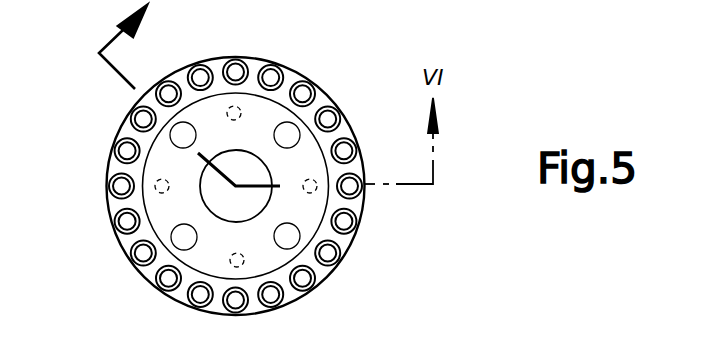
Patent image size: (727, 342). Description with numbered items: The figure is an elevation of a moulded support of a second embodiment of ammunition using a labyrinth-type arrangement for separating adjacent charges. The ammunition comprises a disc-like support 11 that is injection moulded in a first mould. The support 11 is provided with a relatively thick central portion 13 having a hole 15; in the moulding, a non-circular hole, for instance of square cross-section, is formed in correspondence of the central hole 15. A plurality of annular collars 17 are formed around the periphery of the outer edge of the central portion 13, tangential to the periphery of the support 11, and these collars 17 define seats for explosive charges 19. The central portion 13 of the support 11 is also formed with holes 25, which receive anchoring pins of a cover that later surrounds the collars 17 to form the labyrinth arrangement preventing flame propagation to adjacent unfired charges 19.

The disc-like support 11 is at (323, 273).
The central portion 13 is at (265, 117).
The hole 15 is at (206, 190).
The annular collars 17 is at (160, 288).
The explosive charge 19 is at (331, 117).
The holes 25 is at (298, 233).